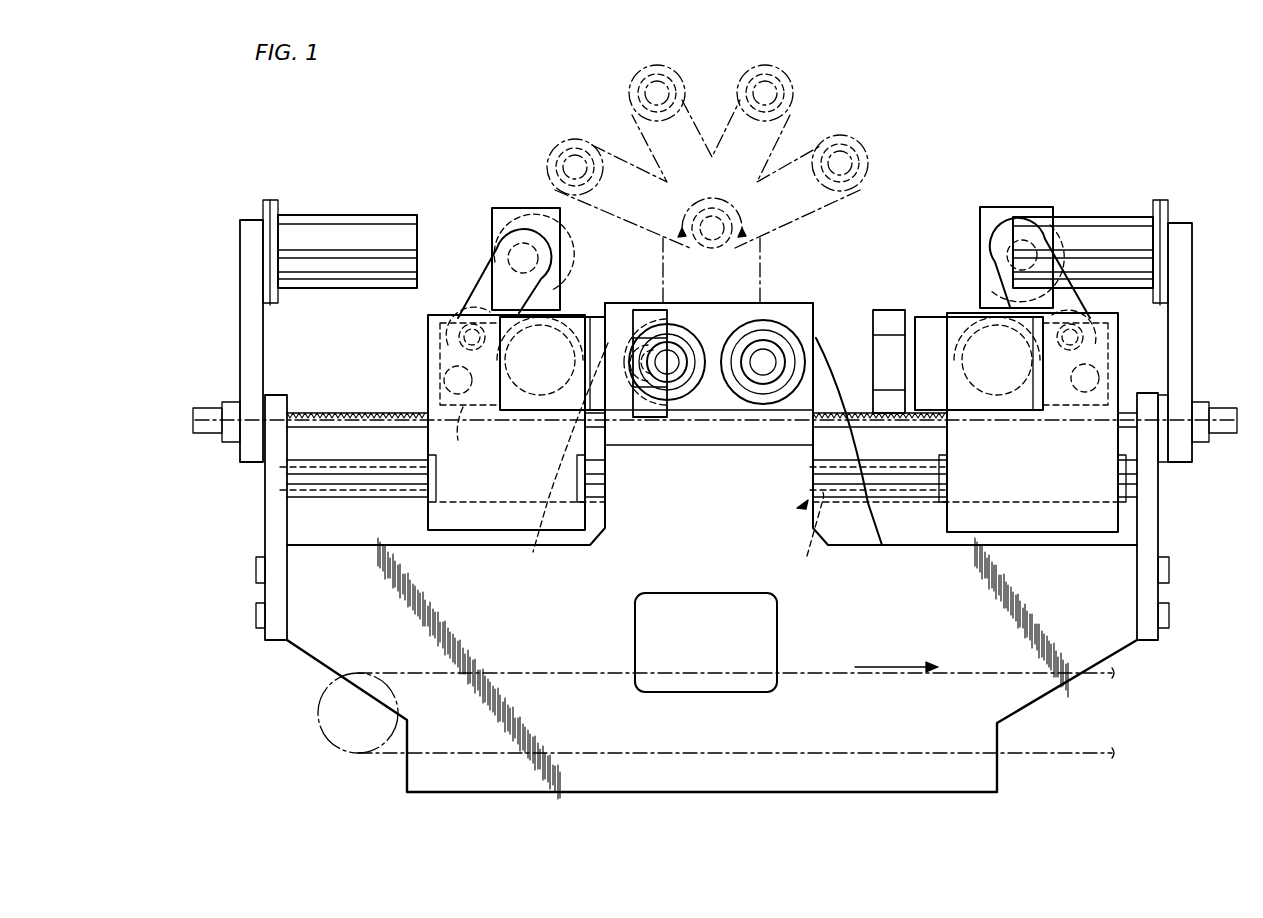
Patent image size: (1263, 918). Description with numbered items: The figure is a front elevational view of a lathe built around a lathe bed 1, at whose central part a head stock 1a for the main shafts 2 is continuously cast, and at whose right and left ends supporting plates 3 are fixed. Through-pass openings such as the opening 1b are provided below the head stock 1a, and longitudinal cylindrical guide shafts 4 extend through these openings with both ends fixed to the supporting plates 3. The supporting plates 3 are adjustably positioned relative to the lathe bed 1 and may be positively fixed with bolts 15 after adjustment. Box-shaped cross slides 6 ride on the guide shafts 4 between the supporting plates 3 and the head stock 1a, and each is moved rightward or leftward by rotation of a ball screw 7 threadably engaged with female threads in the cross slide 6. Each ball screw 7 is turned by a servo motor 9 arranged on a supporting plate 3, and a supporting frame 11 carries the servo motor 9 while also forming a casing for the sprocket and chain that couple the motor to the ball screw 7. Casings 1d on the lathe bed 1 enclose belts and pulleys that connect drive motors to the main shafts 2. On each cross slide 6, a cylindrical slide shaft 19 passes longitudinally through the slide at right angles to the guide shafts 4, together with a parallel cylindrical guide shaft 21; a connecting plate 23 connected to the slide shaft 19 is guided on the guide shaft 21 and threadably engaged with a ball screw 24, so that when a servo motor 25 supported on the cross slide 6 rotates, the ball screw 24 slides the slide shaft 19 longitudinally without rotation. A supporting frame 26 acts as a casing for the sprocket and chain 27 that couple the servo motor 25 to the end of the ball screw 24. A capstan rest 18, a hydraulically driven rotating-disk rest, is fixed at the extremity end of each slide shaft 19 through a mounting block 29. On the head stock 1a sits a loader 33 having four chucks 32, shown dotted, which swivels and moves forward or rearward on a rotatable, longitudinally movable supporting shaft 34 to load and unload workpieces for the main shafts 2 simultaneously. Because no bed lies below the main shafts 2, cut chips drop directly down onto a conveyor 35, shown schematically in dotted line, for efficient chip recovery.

The lathe bed 1 is at (709, 575).
The head stock 1a is at (796, 303).
The through-pass opening 1b is at (810, 536).
The casing 1d is at (562, 545).
The main shaft 2 is at (766, 372).
The supporting plate 3 is at (265, 505).
The guide shaft 4 is at (348, 492).
The cross slide 6 is at (500, 476).
The ball screw 7 is at (193, 420).
The servo motor 9 is at (342, 225).
The supporting frame 11 is at (240, 334).
The bolt 15 is at (256, 615).
The capstan rest 18 is at (640, 305).
The slide shaft 19 is at (540, 412).
The guide shaft 21 is at (445, 378).
The connecting plate 23 is at (462, 440).
The ball screw 24 is at (460, 310).
The servo motor 25 is at (516, 222).
The supporting frame 26 is at (500, 285).
The sprocket and chain 27 is at (510, 300).
The mounting block 29 is at (595, 320).
The chuck 32 is at (578, 138).
The loader 33 is at (707, 75).
The supporting shaft 34 is at (740, 222).
The conveyor 35 is at (512, 672).